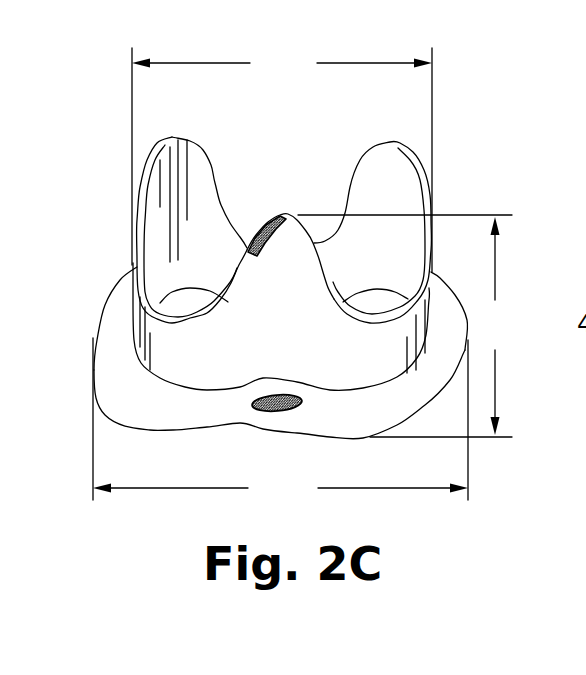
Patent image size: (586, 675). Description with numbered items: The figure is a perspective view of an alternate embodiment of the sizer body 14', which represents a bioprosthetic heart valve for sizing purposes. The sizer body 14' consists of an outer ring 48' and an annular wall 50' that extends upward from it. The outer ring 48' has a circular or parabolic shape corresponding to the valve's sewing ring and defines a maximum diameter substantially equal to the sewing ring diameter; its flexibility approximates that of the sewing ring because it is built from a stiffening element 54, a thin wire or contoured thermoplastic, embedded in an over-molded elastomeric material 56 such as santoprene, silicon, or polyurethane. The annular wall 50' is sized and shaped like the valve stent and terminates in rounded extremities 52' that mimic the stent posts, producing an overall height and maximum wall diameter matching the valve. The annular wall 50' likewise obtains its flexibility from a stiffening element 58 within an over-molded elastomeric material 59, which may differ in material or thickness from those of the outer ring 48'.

The sizer body 14' is at (296, 269).
The outer ring 48' is at (260, 326).
The annular wall 50' is at (372, 205).
The rounded extremities 52' is at (281, 210).
The stiffening element 54 is at (288, 412).
The elastomeric material 56 is at (135, 393).
The stiffening element 58 is at (290, 262).
The elastomeric material 59 is at (253, 231).